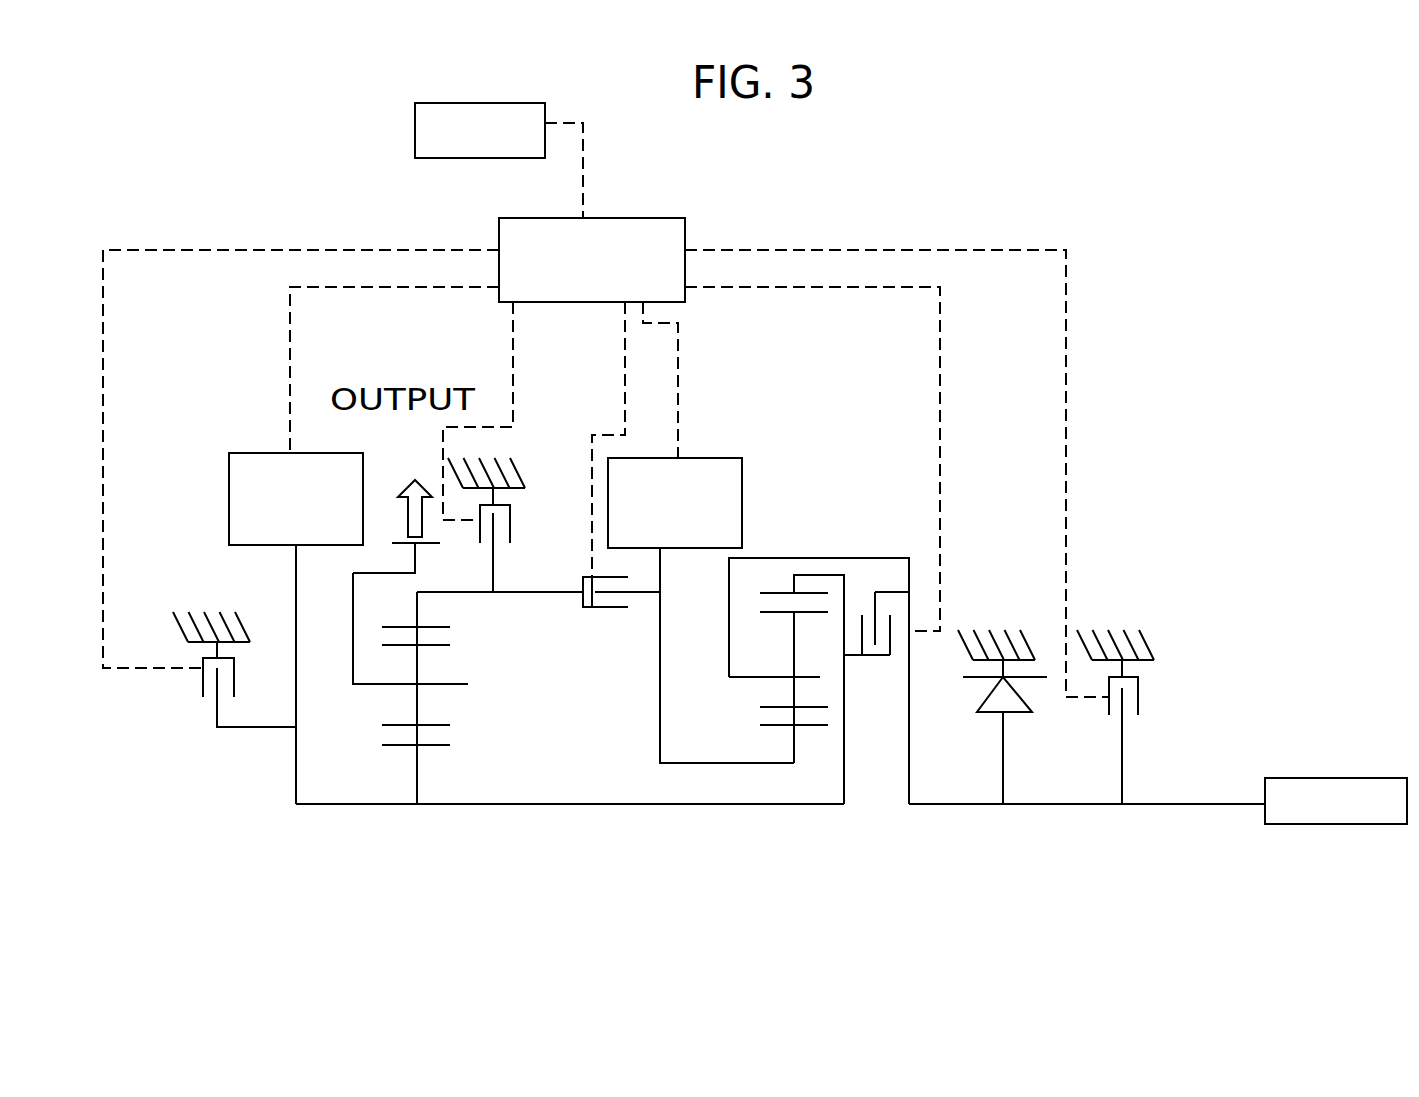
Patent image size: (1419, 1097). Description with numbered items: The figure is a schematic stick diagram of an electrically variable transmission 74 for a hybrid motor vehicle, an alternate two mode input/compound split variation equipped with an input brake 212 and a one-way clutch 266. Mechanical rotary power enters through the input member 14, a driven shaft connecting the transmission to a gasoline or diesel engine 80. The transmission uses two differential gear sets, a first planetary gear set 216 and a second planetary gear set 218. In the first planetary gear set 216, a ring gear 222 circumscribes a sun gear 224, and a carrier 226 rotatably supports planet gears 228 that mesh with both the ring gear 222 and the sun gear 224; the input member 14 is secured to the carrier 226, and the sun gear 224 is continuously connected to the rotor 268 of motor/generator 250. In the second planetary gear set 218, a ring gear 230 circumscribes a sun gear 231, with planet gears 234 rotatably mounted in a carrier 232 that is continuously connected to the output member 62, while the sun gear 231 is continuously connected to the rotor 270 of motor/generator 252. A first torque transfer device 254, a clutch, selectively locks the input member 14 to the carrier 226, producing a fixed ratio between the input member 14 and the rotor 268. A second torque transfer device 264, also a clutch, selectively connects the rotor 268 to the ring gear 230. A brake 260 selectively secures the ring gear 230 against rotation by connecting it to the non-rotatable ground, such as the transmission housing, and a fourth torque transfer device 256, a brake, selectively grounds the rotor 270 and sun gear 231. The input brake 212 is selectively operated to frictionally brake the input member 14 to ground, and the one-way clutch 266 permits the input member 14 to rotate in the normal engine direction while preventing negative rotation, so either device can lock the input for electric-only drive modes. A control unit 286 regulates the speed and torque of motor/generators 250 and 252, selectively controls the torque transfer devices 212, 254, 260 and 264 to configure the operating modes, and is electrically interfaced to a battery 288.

The battery 288 is at (452, 142).
The control unit 286 is at (638, 218).
The motor/generator 252 is at (228, 498).
The motor/generator 250 is at (742, 495).
The fourth torque transfer device 256 is at (205, 660).
The brake 260 is at (510, 506).
The rotor 270 is at (297, 627).
The output member 62 is at (352, 620).
The carrier 232 is at (382, 685).
The sun gear 231 is at (428, 748).
The ring gear 230 is at (427, 626).
The planet gears 234 is at (417, 663).
The planetary gear set 218 is at (462, 698).
The second torque transfer device 264 is at (588, 605).
The rotor 268 is at (661, 567).
The ring gear 222 is at (770, 593).
The first planetary gear set 216 is at (798, 642).
The planet gears 228 is at (793, 657).
The carrier 226 is at (757, 678).
The sun gear 224 is at (783, 727).
The first torque transfer device 254 is at (867, 655).
The one-way clutch 266 is at (978, 693).
The input brake 212 is at (1138, 692).
The input member 14 is at (1185, 803).
The engine 80 is at (1348, 824).
The electrically variable transmission 74 is at (428, 894).